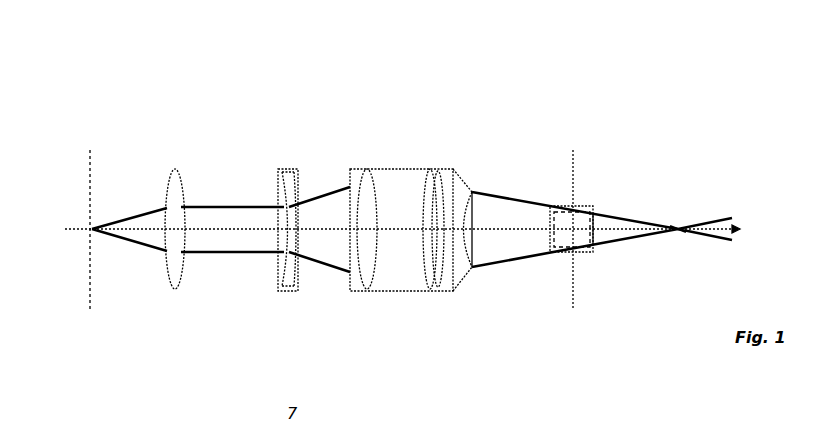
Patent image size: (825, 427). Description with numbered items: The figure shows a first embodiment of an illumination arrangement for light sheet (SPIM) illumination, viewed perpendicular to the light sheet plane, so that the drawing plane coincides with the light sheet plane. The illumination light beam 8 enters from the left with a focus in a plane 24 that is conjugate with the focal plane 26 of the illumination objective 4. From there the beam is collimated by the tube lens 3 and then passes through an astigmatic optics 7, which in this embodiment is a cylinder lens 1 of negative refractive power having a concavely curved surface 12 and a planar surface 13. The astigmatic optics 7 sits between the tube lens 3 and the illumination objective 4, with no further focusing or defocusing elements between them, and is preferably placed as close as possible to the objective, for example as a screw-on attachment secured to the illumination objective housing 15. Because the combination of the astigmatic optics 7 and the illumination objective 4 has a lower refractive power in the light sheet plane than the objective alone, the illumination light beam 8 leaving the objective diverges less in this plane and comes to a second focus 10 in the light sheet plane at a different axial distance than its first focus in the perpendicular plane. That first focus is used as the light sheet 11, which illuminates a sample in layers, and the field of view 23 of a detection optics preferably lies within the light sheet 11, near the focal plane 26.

The cylinder lens 1 is at (292, 228).
The tube lens 3 is at (182, 188).
The illumination objective 4 is at (411, 195).
The astigmatic optics 7 is at (295, 113).
The illumination light beam 8 is at (142, 222).
The second focus 10 is at (691, 215).
The light sheet 11 is at (575, 200).
The concavely curved surface 12 is at (300, 281).
The planar surface 13 is at (283, 281).
The illumination objective housing 15 is at (396, 292).
The field of view 23 is at (583, 223).
The plane conjugate with the focal plane 24 is at (88, 188).
The focal plane 26 is at (575, 176).